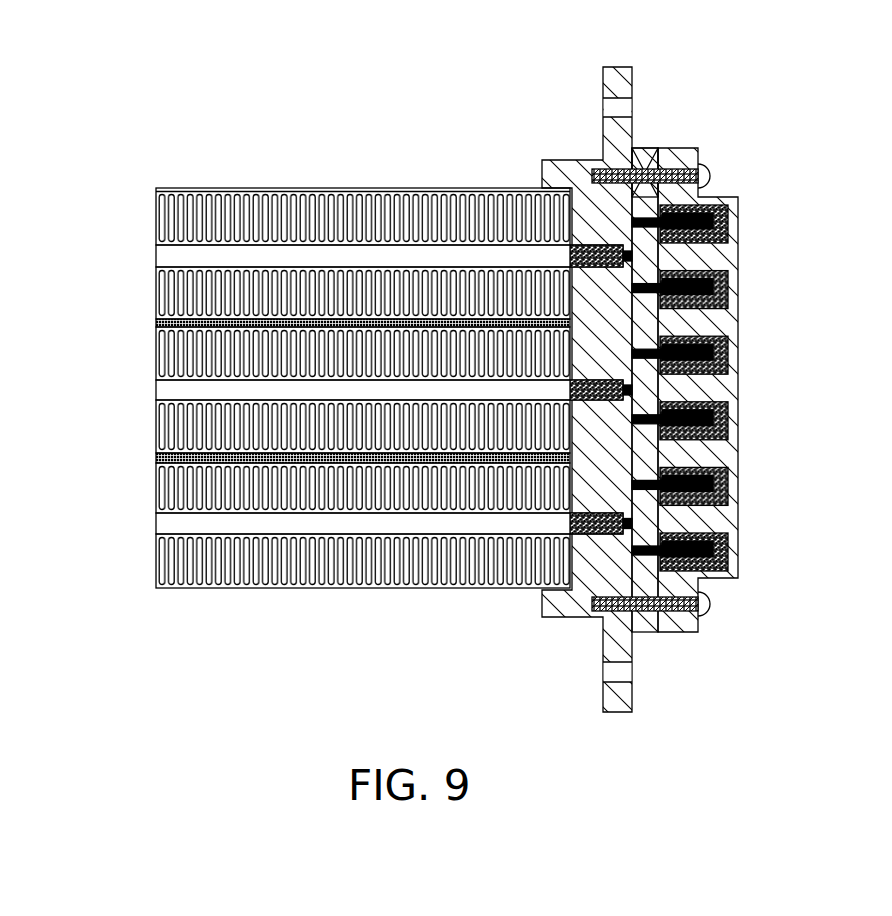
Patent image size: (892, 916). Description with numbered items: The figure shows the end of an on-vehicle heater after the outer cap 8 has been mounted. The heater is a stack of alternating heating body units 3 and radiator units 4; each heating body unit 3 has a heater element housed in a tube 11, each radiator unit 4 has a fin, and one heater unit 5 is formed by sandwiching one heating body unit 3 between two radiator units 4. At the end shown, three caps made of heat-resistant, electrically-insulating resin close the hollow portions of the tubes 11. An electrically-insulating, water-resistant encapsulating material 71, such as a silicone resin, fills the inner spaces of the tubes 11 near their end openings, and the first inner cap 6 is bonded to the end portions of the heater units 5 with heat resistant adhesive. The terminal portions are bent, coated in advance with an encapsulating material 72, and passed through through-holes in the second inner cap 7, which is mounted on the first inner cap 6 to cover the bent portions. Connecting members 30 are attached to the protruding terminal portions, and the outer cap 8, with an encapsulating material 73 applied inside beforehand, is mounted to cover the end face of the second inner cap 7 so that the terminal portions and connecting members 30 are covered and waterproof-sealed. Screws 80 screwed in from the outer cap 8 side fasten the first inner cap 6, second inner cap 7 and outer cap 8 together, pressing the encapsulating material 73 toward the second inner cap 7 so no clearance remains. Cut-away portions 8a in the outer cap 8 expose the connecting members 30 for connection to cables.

The heating body unit 3 is at (146, 261).
The radiator unit 4 is at (146, 223).
The heater unit 5 is at (335, 388).
The first inner cap 6 is at (580, 160).
The second inner cap 7 is at (644, 148).
The outer cap 8 is at (681, 160).
The cut-away portion 8a is at (727, 303).
The tube 11 is at (335, 395).
The connecting member 30 is at (732, 220).
The encapsulating material 71 is at (592, 240).
The encapsulating material 72 is at (657, 162).
The encapsulating material 73 is at (727, 235).
The screw 80 is at (707, 170).